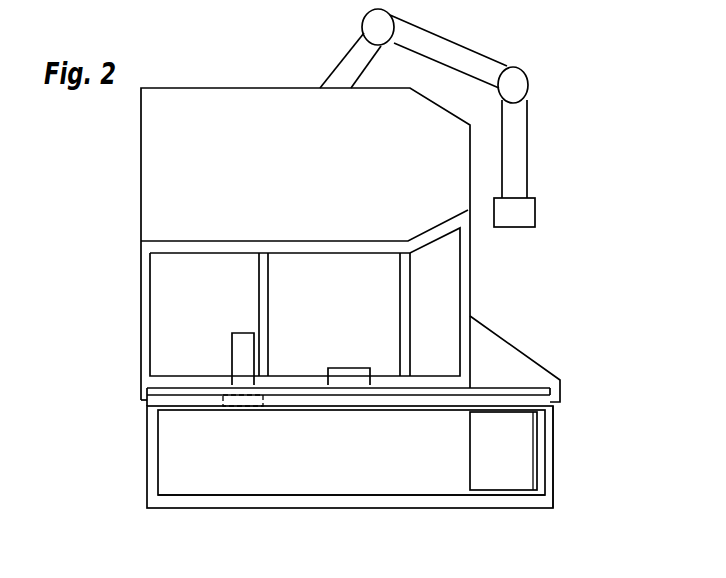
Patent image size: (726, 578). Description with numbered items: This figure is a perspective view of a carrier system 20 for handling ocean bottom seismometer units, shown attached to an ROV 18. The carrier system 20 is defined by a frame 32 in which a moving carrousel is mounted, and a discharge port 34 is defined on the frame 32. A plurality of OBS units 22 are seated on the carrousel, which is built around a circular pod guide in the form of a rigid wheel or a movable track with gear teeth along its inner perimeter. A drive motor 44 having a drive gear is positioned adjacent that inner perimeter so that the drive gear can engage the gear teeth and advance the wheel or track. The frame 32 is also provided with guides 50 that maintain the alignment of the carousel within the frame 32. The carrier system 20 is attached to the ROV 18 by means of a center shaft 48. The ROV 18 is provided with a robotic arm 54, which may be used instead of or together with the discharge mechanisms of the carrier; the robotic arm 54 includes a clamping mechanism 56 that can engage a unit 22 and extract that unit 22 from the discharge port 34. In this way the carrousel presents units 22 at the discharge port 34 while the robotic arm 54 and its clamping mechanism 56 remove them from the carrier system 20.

The ROV 18 is at (141, 161).
The carrier system 20 is at (140, 479).
The OBS unit 22 is at (497, 471).
The frame 32 is at (220, 502).
The discharge port 34 is at (564, 484).
The drive motor 44 is at (230, 342).
The center shaft 48 is at (346, 364).
The guides 50 is at (130, 397).
The robotic arm 54 is at (340, 57).
The clamping mechanism 56 is at (535, 213).